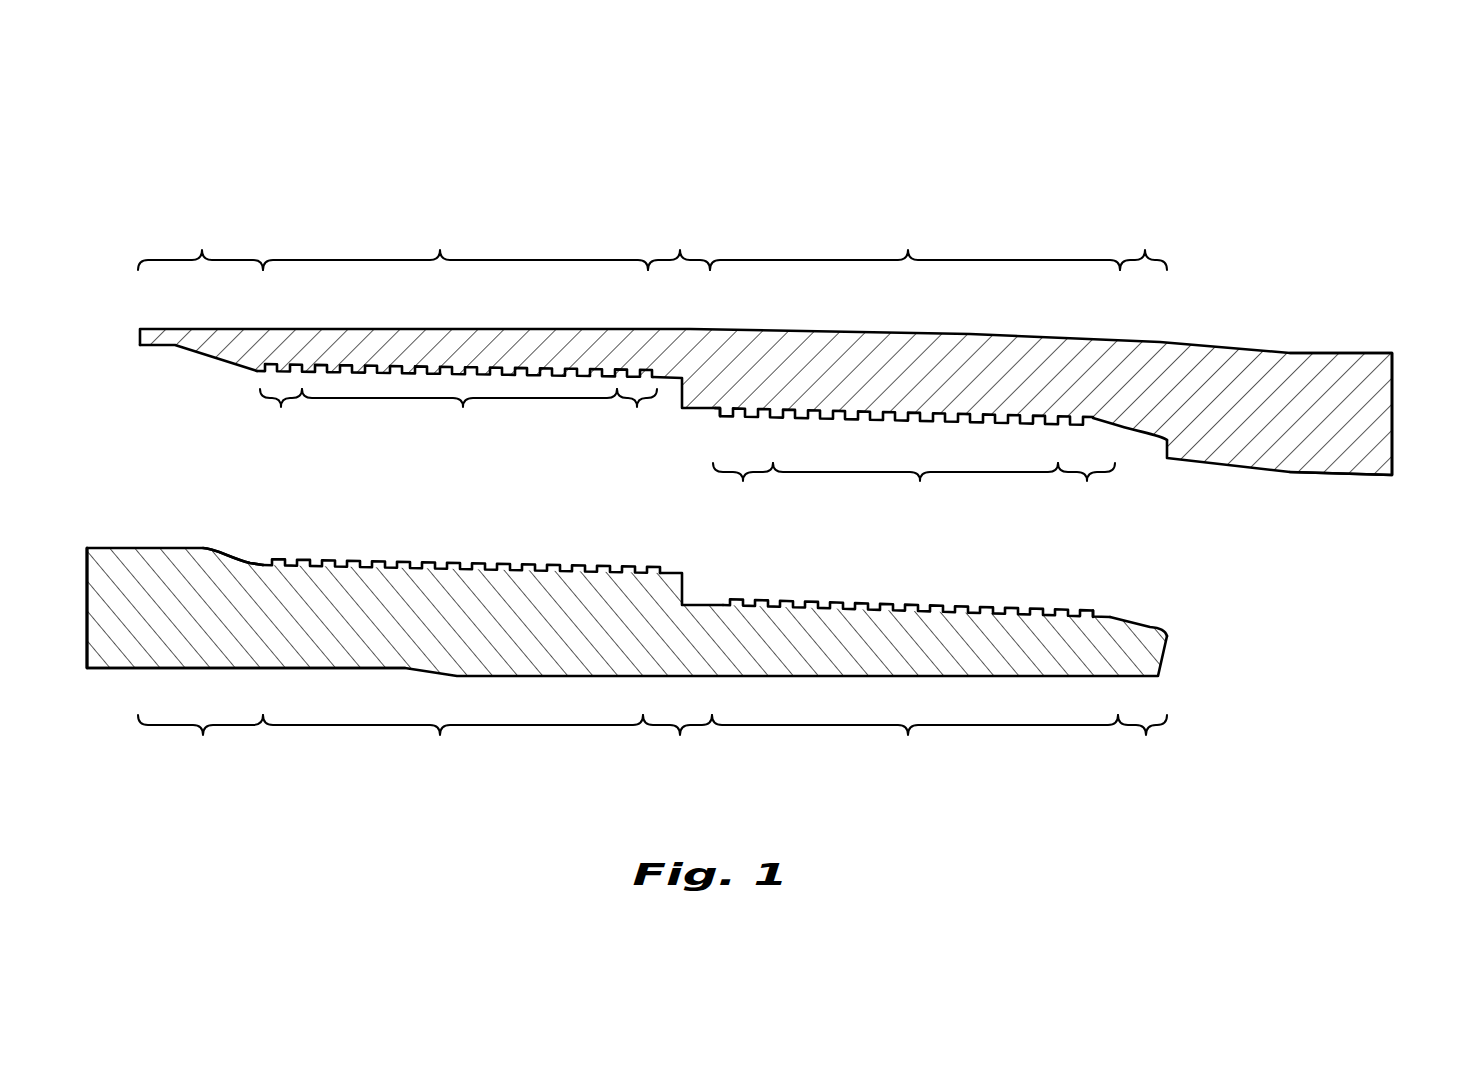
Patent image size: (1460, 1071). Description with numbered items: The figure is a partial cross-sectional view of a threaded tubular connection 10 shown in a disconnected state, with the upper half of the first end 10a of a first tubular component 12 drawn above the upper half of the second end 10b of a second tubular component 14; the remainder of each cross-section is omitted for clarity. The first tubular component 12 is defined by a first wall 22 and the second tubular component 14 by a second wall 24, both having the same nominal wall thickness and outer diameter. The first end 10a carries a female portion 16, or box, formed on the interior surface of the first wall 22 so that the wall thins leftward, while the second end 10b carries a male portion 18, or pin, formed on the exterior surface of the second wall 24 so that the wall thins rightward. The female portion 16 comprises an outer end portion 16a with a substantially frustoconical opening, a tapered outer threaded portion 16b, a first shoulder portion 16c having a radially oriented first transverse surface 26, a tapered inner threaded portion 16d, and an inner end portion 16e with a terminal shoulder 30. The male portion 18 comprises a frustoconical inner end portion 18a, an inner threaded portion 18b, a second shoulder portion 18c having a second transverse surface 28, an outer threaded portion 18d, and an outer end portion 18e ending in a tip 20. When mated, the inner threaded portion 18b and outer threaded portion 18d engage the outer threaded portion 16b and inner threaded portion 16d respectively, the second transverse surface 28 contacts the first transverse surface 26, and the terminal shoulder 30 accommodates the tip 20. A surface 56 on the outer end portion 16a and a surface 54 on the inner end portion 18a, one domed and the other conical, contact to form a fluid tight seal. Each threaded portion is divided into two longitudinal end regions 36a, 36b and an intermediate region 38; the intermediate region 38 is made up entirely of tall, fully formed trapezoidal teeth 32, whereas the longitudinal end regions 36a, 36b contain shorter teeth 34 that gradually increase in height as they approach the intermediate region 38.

The threaded tubular connection 10 is at (841, 135).
The first end 10a is at (713, 347).
The second end 10b is at (642, 640).
The first tubular component 12 is at (1405, 335).
The second tubular component 14 is at (114, 673).
The female portion 16 is at (188, 367).
The outer end portion 16a is at (200, 242).
The outer threaded portion 16b is at (455, 242).
The first shoulder portion 16c is at (679, 242).
The inner threaded portion 16d is at (915, 242).
The inner end portion 16e is at (1143, 242).
The male portion 18 is at (1207, 591).
The inner end portion 18a is at (200, 744).
The inner threaded portion 18b is at (453, 744).
The second shoulder portion 18c is at (677, 744).
The outer threaded portion 18d is at (915, 744).
The outer end portion 18e is at (1142, 744).
The tip 20 is at (1167, 641).
The first wall 22 is at (1312, 363).
The second wall 24 is at (160, 637).
The first transverse surface 26 is at (677, 396).
The second transverse surface 28 is at (683, 590).
The terminal shoulder 30 is at (1158, 447).
The fully formed teeth 32 is at (867, 420).
The shorter teeth 34 is at (772, 418).
The longitudinal end region 36a is at (516, 455).
The longitudinal end region 36b is at (866, 455).
The intermediate region 38 is at (680, 455).
The surface 54 is at (228, 553).
The surface 56 is at (202, 352).